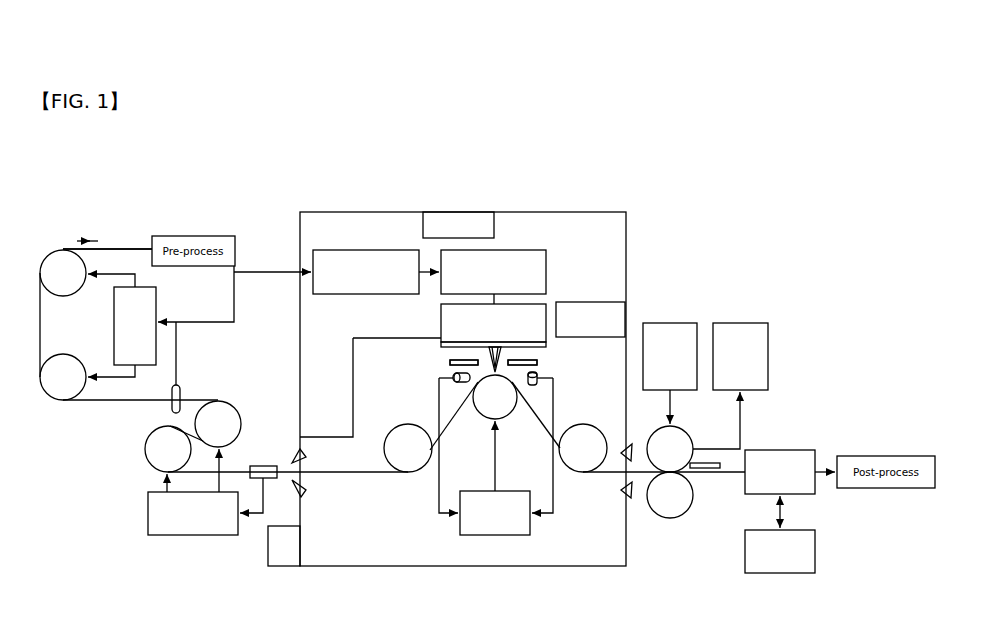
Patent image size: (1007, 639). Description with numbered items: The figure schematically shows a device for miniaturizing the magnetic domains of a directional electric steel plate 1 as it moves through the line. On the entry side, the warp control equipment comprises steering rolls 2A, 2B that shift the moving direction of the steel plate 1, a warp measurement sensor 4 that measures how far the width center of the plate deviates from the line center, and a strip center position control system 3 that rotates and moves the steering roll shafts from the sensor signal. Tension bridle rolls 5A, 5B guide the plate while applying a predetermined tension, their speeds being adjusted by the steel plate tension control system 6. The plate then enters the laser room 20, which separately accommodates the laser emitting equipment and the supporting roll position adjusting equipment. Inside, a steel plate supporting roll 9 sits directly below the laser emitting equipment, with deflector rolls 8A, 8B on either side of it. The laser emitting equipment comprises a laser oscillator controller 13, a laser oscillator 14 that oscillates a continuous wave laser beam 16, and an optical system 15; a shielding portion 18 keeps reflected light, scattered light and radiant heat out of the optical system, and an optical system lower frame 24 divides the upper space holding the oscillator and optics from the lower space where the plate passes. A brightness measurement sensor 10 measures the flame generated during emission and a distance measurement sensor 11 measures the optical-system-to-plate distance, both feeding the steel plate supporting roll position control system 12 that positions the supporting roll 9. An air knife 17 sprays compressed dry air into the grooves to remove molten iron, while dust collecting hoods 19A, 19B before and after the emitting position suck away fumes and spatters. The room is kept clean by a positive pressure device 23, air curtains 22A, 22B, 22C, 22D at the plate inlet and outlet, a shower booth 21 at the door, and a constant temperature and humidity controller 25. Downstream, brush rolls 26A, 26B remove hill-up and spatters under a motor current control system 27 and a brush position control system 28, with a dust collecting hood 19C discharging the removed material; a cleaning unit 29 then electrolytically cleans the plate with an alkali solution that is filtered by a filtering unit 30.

The steel plate 1 is at (130, 249).
The steering roll 2A is at (62, 262).
The steering roll 2B is at (62, 388).
The strip center position control system 3 is at (114, 322).
The warp measurement sensor 4 is at (180, 393).
The tension bridle roll 5A is at (231, 413).
The tension bridle roll 5B is at (151, 448).
The steel plate tension control system 6 is at (193, 535).
The deflector roll 8A is at (405, 436).
The deflector roll 8B is at (583, 436).
The steel plate supporting roll 9 is at (487, 412).
The brightness measurement sensor 10 is at (462, 383).
The distance measurement sensor 11 is at (534, 385).
The steel plate supporting roll position control system 12 is at (517, 491).
The laser oscillator controller 13 is at (367, 250).
The laser oscillator 14 is at (520, 250).
The optical system 15 is at (441, 322).
The laser beam 16 is at (472, 352).
The air knife 17 is at (508, 352).
The shielding portion 18 is at (441, 345).
The dust collecting hood 19A is at (448, 367).
The dust collecting hood 19B is at (540, 367).
The dust collecting hood 19C is at (713, 468).
The laser room 20 is at (440, 566).
The shower booth 21 is at (282, 566).
The air curtain 22A is at (308, 455).
The air curtain 22B is at (308, 495).
The air curtain 22C is at (632, 446).
The air curtain 22D is at (629, 498).
The positive pressure device 23 is at (460, 212).
The optical system lower frame 24 is at (362, 338).
The constant temperature and humidity controller 25 is at (590, 302).
The brush roll 26A is at (682, 436).
The brush roll 26B is at (685, 510).
The motor current control system 27 is at (744, 323).
The brush position control system 28 is at (673, 323).
The cleaning unit 29 is at (783, 450).
The filtering unit 30 is at (783, 573).